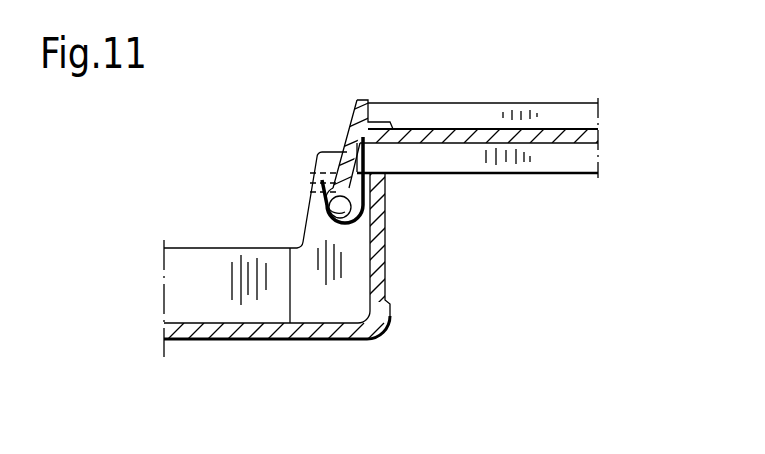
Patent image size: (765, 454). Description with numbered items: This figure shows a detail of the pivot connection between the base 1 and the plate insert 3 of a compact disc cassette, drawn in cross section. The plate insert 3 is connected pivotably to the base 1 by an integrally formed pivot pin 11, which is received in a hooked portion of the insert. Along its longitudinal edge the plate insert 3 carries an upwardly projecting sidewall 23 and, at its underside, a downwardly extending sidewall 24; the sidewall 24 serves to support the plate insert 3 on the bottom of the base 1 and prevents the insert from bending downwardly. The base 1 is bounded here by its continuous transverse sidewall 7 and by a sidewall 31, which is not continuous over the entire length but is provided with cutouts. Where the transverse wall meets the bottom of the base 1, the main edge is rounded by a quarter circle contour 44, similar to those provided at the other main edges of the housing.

The base 1 is at (247, 345).
The plate insert 3 is at (606, 125).
The transverse sidewall 7 is at (382, 252).
The pivot pin 11 is at (360, 213).
The upwardly projecting sidewall 23 is at (545, 163).
The downwardly extending sidewall 24 is at (467, 120).
The sidewall 31 is at (208, 280).
The quarter circle contour 44 is at (378, 331).